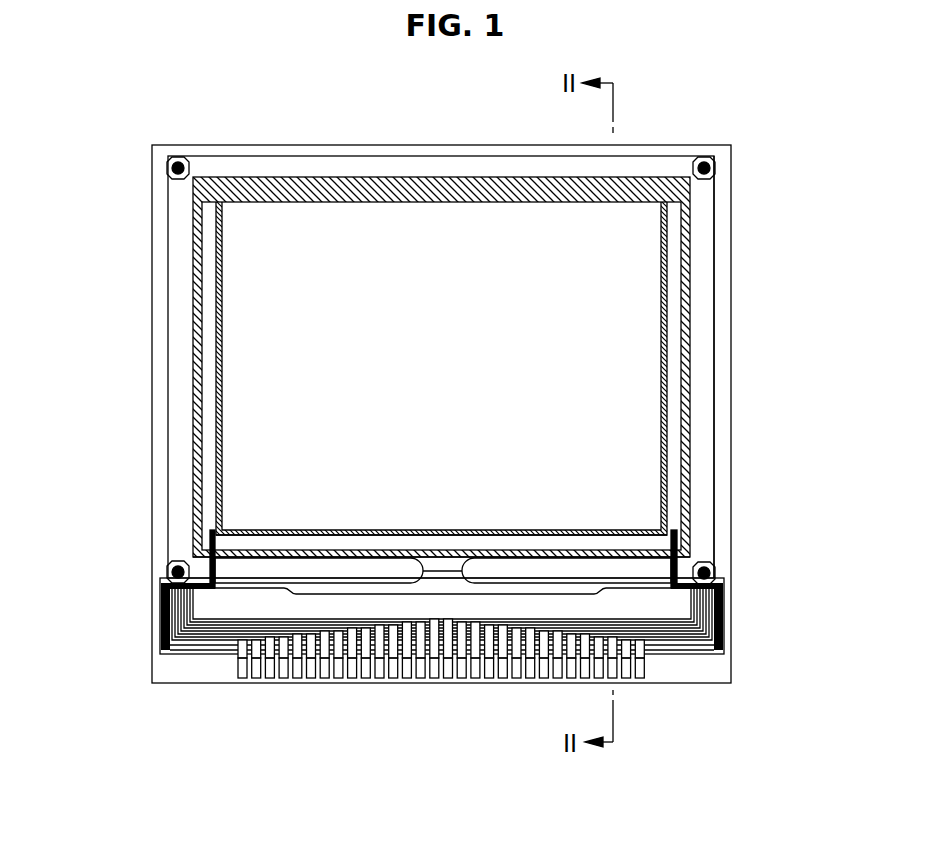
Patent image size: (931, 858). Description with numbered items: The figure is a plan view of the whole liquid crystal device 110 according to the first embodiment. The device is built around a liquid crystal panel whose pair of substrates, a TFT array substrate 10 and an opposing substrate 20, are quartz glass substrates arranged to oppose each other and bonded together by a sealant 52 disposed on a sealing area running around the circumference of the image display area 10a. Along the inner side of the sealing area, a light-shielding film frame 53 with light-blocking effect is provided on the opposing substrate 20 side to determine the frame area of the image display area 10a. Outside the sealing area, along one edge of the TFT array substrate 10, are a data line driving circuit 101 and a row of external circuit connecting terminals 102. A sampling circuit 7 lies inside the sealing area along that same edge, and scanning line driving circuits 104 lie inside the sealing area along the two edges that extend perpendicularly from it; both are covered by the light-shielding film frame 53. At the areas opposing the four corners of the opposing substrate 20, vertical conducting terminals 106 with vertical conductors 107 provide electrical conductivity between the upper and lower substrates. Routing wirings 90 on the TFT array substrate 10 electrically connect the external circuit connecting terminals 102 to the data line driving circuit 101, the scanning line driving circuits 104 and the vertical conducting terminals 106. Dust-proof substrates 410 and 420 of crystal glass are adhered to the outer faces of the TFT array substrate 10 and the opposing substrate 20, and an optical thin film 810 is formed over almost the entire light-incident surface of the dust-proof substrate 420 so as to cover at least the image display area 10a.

The liquid crystal device 110 is at (425, 350).
The TFT array substrate 10 is at (444, 324).
The dust-proof substrate 410 is at (363, 145).
The opposing substrate 20 is at (168, 222).
The optical thin film 810 is at (167, 262).
The image display area 10a is at (262, 322).
The dust-proof substrate 420 is at (168, 388).
The sampling circuit 7 is at (292, 547).
The vertical conducting terminals 106 is at (173, 565).
The vertical conductors 107 is at (163, 573).
The routing wirings 90 is at (393, 652).
The data line driving circuit 101 is at (221, 608).
The external circuit connecting terminals 102 is at (410, 678).
The sealant 52 is at (705, 302).
The scanning line driving circuits 104 is at (677, 370).
The light-shielding film frame 53 is at (665, 537).